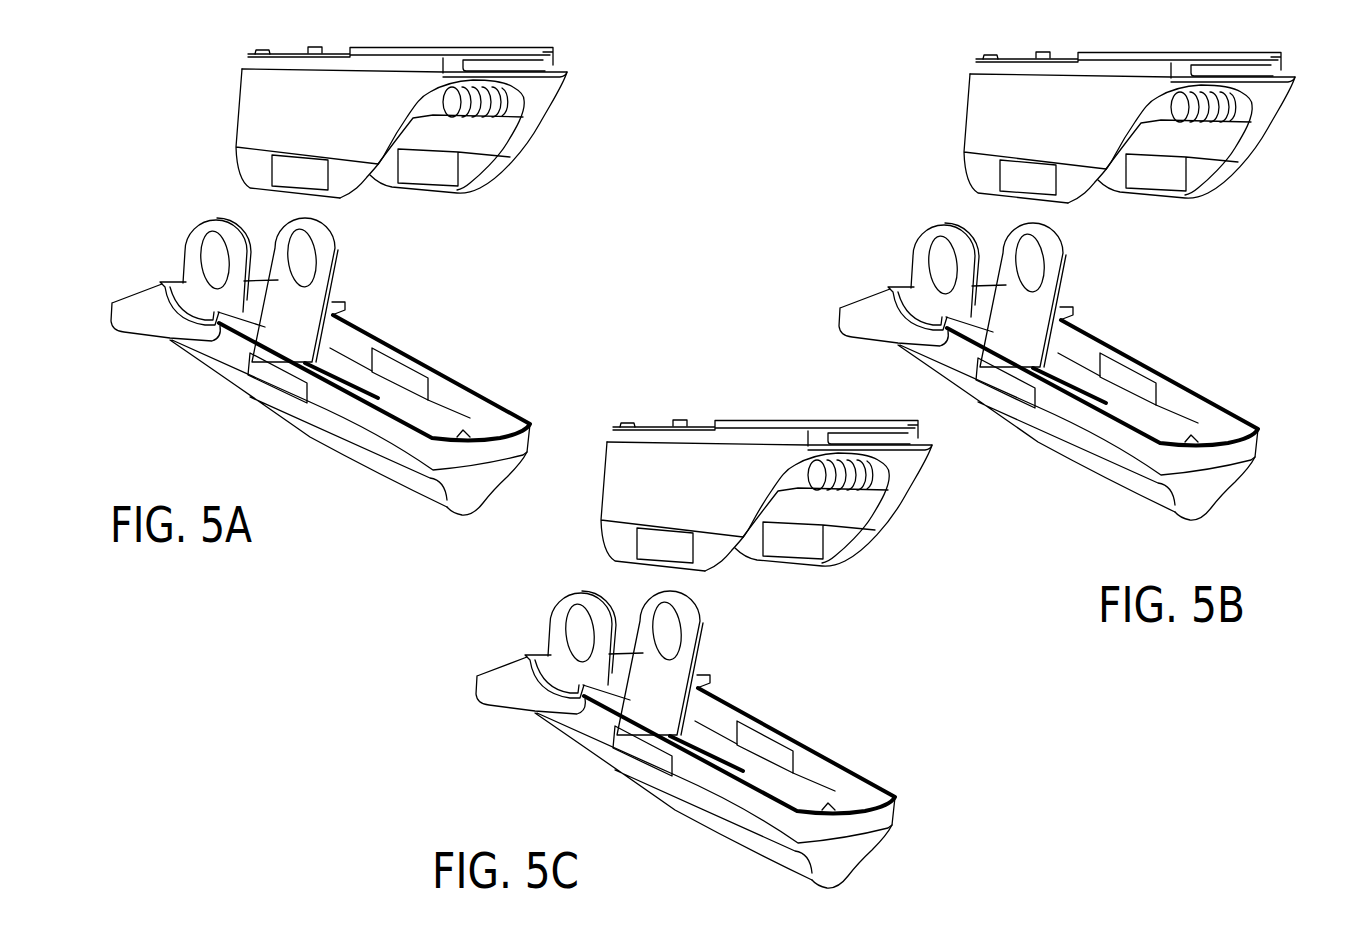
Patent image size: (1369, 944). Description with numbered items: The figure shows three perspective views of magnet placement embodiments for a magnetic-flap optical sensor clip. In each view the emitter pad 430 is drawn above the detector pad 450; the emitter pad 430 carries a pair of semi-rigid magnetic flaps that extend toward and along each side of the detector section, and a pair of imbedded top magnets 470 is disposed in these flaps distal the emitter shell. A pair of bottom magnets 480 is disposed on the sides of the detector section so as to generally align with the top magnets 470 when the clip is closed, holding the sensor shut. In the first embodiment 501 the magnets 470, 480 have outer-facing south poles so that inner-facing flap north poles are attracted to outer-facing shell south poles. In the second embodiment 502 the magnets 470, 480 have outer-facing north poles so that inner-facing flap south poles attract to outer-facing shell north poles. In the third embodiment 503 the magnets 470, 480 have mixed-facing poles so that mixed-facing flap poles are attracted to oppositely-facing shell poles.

In FIG. 5A, the emitter pad 430 is at (235, 90).
In FIG. 5B, the emitter pad 430 is at (1103, 137).
In FIG. 5C, the emitter pad 430 is at (740, 505).
In FIG. 5A, the detector pad 450 is at (204, 228).
In FIG. 5B, the detector pad 450 is at (1048, 348).
In FIG. 5C, the detector pad 450 is at (685, 716).
In FIG. 5A, the top magnets 470 is at (322, 178).
In FIG. 5B, the top magnets 470 is at (1119, 193).
In FIG. 5C, the top magnets 470 is at (756, 561).
In FIG. 5A, the bottom magnets 480 is at (410, 387).
In FIG. 5B, the bottom magnets 480 is at (1066, 419).
In FIG. 5C, the bottom magnets 480 is at (703, 787).
In FIG. 5A, the first embodiment 501 is at (486, 284).
In FIG. 5B, the second embodiment 502 is at (1069, 281).
In FIG. 5C, the third embodiment 503 is at (704, 649).